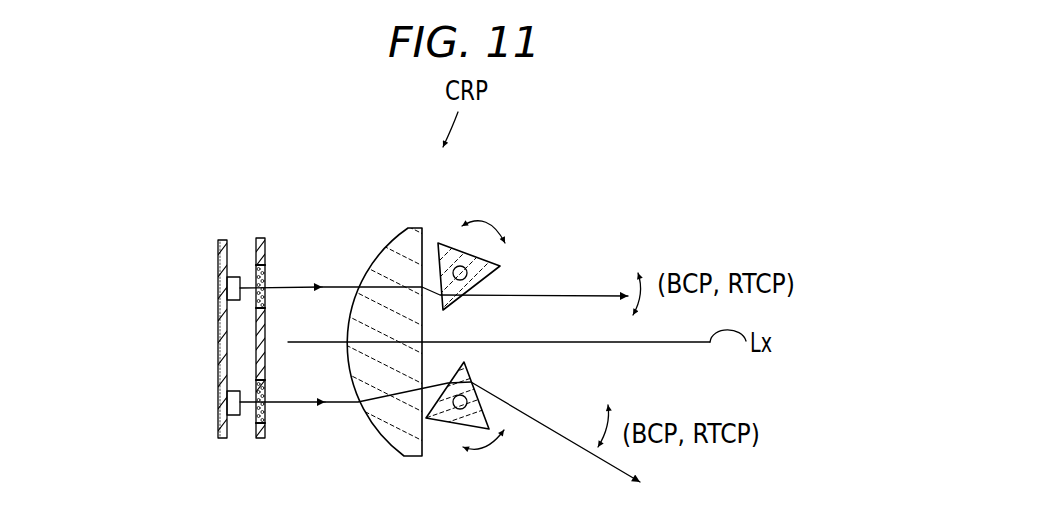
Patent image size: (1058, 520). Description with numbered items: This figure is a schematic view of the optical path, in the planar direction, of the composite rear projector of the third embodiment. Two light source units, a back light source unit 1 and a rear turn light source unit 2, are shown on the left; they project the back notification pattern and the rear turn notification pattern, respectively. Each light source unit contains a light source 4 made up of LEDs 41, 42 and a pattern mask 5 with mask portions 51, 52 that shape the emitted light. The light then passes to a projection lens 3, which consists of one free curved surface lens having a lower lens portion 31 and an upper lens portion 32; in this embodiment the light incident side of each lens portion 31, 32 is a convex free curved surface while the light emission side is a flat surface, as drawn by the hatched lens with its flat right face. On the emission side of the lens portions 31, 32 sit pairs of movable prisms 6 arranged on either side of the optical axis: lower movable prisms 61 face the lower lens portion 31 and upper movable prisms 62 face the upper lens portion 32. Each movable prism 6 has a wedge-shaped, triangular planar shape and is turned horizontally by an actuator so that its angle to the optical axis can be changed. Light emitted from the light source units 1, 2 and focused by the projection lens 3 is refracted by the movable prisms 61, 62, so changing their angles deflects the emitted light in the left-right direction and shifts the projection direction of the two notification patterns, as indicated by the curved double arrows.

The back light source unit 1 is at (190, 319).
The rear turn light source unit 2 is at (212, 273).
The projection lens 3 is at (422, 308).
The lower lens portion 31 is at (422, 308).
The upper lens portion 32 is at (412, 229).
The light source 4 is at (250, 386).
The light source 41 is at (233, 288).
The light source 42 is at (233, 403).
The pattern mask 5 is at (304, 302).
The pattern mask 51 is at (260, 286).
The pattern mask 52 is at (260, 401).
The movable prism 6 is at (520, 349).
The lower movable prism 61 is at (500, 265).
The upper movable prism 62 is at (450, 424).